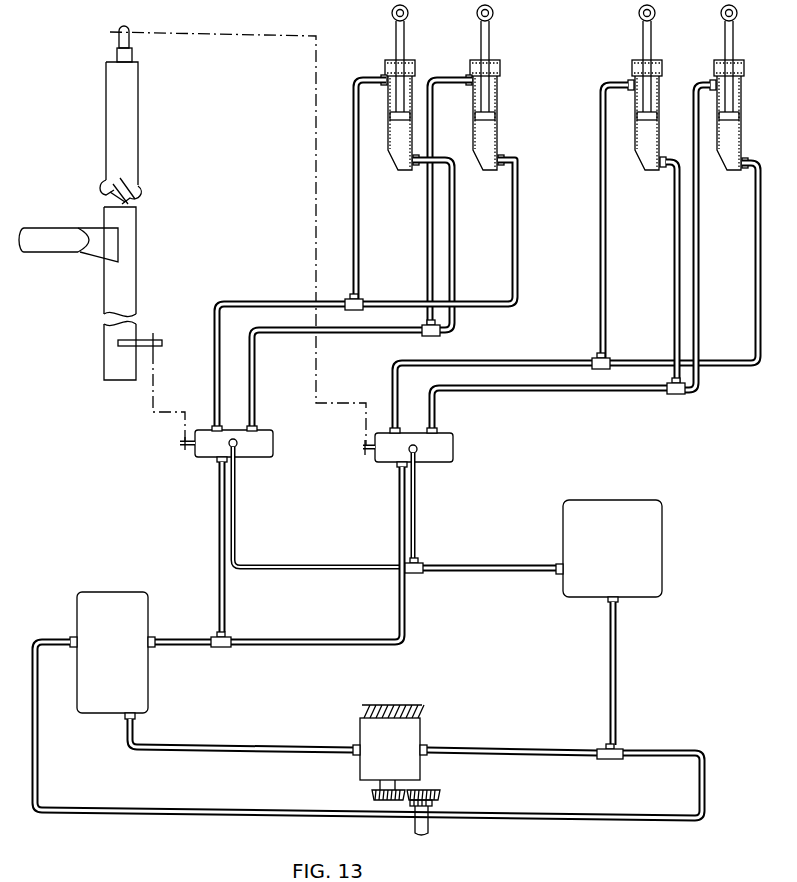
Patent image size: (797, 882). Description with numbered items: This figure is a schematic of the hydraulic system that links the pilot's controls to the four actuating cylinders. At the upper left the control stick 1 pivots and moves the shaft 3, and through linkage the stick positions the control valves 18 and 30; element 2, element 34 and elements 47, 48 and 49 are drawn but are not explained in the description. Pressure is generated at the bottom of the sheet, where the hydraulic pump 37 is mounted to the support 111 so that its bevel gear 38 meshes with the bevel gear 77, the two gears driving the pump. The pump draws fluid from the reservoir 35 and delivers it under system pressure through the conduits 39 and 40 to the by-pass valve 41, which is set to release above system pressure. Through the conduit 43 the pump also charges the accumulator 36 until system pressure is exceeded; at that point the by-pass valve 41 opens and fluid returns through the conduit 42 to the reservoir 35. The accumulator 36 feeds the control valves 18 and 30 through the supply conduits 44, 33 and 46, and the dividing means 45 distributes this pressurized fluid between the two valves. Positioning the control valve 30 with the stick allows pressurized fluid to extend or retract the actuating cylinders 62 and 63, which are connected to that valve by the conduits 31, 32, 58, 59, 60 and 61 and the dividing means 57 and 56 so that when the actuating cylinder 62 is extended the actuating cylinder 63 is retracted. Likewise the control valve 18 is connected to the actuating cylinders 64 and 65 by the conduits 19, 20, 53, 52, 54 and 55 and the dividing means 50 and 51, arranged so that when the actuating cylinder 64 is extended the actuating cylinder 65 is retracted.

The control stick 1 is at (50, 252).
The cylinder 2 is at (136, 278).
The shaft 3 is at (131, 197).
The control valve 18 is at (433, 463).
The conduit 19 is at (560, 359).
The conduit 20 is at (545, 396).
The control valve 30 is at (255, 458).
The conduit 31 is at (270, 297).
The conduit 32 is at (284, 334).
The supply conduit 33 is at (322, 570).
The conduit 34 is at (219, 597).
The reservoir 35 is at (148, 688).
The accumulator 36 is at (650, 598).
The hydraulic pump 37 is at (421, 763).
The bevel gear 38 is at (372, 795).
The conduit 39 is at (248, 751).
The conduit 40 is at (522, 756).
The by-pass valve 41 is at (610, 759).
The conduit 42 is at (38, 706).
The conduit 43 is at (616, 672).
The supply conduit 44 is at (460, 572).
The dividing means 45 is at (421, 574).
The supply conduit 46 is at (416, 520).
The conduit 47 is at (399, 530).
The junction 48 is at (228, 650).
The conduit 49 is at (186, 648).
The dividing means 50 is at (595, 358).
The dividing means 51 is at (679, 397).
The conduit 52 is at (673, 295).
The conduit 53 is at (606, 270).
The conduit 54 is at (699, 312).
The conduit 55 is at (755, 283).
The dividing means 56 is at (422, 337).
The dividing means 57 is at (348, 300).
The conduit 58 is at (358, 225).
The conduit 59 is at (430, 245).
The conduit 60 is at (453, 256).
The conduit 61 is at (514, 242).
The actuating cylinder 62 is at (408, 116).
The actuating cylinder 63 is at (499, 102).
The actuating cylinder 64 is at (638, 70).
The actuating cylinder 65 is at (720, 70).
The bevel gear 77 is at (437, 803).
The support 111 is at (418, 712).